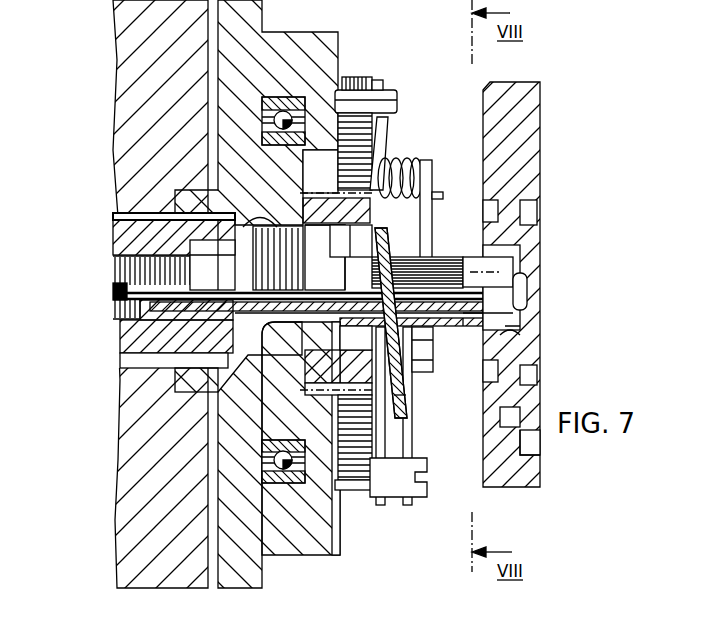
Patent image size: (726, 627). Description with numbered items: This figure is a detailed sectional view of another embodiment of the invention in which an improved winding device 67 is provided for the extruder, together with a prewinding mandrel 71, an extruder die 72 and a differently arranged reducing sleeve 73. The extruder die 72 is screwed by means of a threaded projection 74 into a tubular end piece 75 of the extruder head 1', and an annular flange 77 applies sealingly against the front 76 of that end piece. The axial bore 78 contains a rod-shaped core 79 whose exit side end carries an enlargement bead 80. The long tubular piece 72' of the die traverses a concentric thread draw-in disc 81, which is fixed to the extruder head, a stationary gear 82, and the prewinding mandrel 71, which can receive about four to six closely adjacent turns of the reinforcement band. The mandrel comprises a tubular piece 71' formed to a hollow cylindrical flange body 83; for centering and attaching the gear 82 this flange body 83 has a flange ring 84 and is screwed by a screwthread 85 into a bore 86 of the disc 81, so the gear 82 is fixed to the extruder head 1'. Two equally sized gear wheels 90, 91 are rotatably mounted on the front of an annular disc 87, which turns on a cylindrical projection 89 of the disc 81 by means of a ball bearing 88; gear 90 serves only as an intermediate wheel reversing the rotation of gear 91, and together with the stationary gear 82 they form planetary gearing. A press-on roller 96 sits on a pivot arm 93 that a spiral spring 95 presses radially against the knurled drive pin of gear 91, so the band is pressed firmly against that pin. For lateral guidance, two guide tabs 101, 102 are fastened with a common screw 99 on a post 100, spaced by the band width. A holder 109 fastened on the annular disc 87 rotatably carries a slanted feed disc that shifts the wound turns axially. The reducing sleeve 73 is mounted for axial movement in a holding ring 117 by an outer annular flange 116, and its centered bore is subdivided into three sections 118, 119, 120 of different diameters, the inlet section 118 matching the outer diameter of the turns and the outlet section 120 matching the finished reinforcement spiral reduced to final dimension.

The extruder head 1' is at (145, 275).
The front of the tubular end piece 76 is at (125, 224).
The annular flange 77 is at (140, 246).
The threaded projection 74 is at (130, 270).
The rod-shaped core 79 is at (125, 292).
The axial bore 78 is at (130, 312).
The tubular end piece 75 is at (128, 330).
The extruder die 72 is at (291, 344).
The tubular piece of the extruder die 72' is at (427, 337).
The prewinding mandrel 71 is at (422, 255).
The tubular piece of the prewinding mandrel 71' is at (474, 346).
The ball bearing 88 is at (290, 97).
The cylindrical projection 89 is at (300, 190).
The bore 86 is at (290, 230).
The gear wheel 90 is at (356, 90).
The winding device 67 is at (377, 66).
The spiral spring 95 is at (402, 165).
The pivot arm 93 is at (428, 222).
The holding ring 117 is at (528, 100).
The outer annular flange 116 is at (512, 210).
The reducing sleeve 73 is at (532, 247).
The inlet side bore section 118 is at (503, 252).
The enlargement bead 80 is at (520, 288).
The middle bore section 119 is at (518, 313).
The outlet side bore section 120 is at (517, 328).
The thread draw-in disc 81 is at (255, 573).
The gear wheel 91 is at (337, 487).
The hollow cylindrical flange body 83 is at (275, 345).
The screwthread 85 is at (282, 352).
The annular disc 87 is at (337, 548).
The stationary gear 82 is at (323, 373).
The post 100 is at (367, 492).
The guide tab 101 is at (378, 502).
The guide tab 102 is at (415, 500).
The press-on roller 96 is at (427, 368).
The common screw 99 is at (427, 488).
The flange ring 84 is at (398, 412).
The holder 109 is at (404, 405).